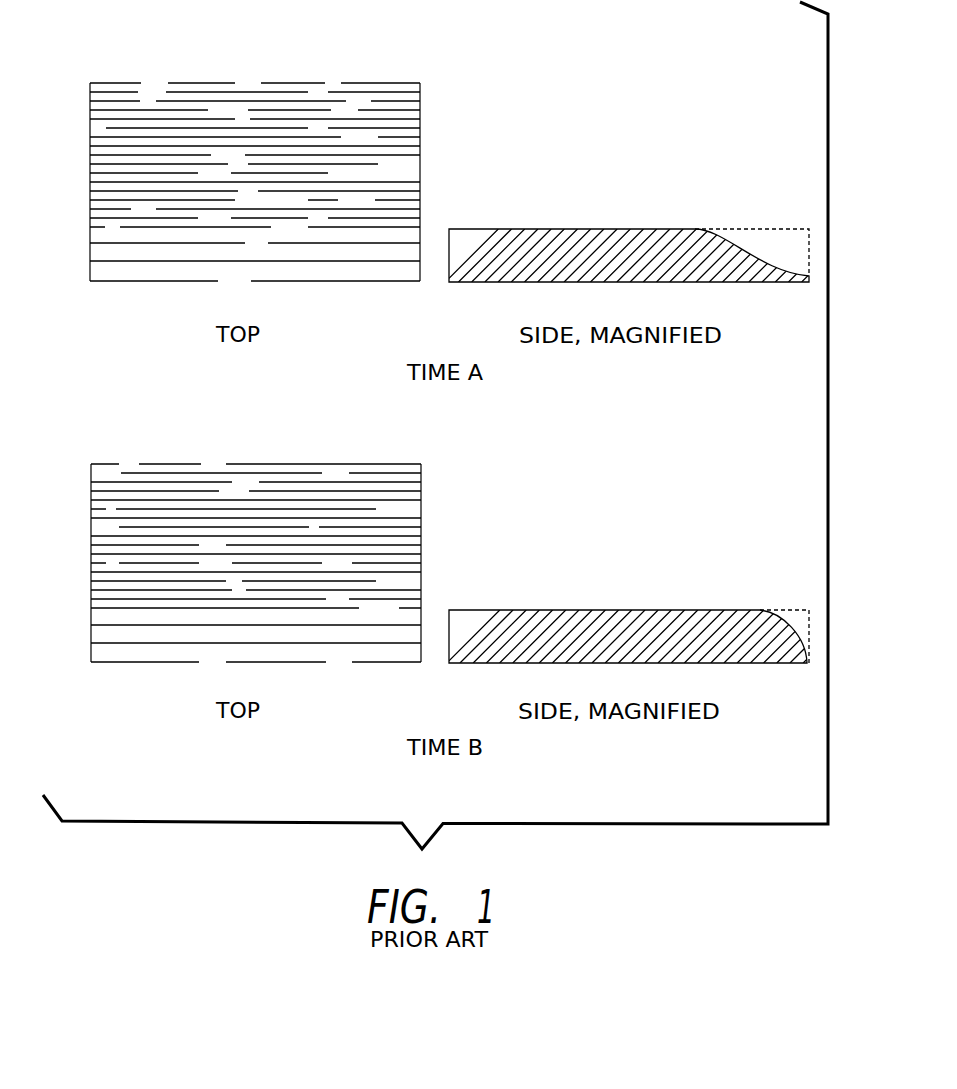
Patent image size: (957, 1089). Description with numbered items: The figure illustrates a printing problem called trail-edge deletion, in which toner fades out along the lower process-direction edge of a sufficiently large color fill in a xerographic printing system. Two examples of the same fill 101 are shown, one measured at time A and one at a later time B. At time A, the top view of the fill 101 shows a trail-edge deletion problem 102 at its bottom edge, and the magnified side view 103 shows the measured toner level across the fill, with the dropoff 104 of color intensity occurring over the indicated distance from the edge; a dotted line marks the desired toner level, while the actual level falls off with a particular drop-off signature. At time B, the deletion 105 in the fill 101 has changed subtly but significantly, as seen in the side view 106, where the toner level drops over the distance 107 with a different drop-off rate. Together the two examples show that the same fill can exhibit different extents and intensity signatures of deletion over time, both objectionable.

The fill 101 is at (421, 132).
The trail-edge deletion problem 102 is at (87, 233).
The side view 103 is at (517, 228).
The dropoff 104 is at (808, 216).
The deletion 105 is at (87, 613).
The side view 106 is at (541, 610).
The dropoff distance 107 is at (809, 603).